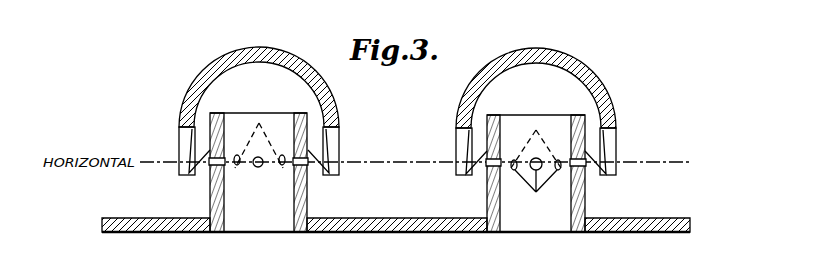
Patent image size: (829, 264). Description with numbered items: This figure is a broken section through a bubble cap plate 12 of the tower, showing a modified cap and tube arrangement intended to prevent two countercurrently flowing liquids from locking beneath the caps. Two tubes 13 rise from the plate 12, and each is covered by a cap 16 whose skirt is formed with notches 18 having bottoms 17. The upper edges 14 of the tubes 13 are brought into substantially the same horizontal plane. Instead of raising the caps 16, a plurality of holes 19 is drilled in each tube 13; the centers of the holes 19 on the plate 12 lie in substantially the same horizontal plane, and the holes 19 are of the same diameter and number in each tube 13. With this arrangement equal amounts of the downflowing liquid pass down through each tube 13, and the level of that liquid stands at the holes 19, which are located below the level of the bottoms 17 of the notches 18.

The plate 12 is at (395, 233).
The tube 13 is at (308, 205).
The upper edge 14 is at (303, 113).
The cap 16 is at (213, 62).
The bottom 17 is at (340, 139).
The notch 18 is at (590, 172).
The hole 19 is at (258, 168).